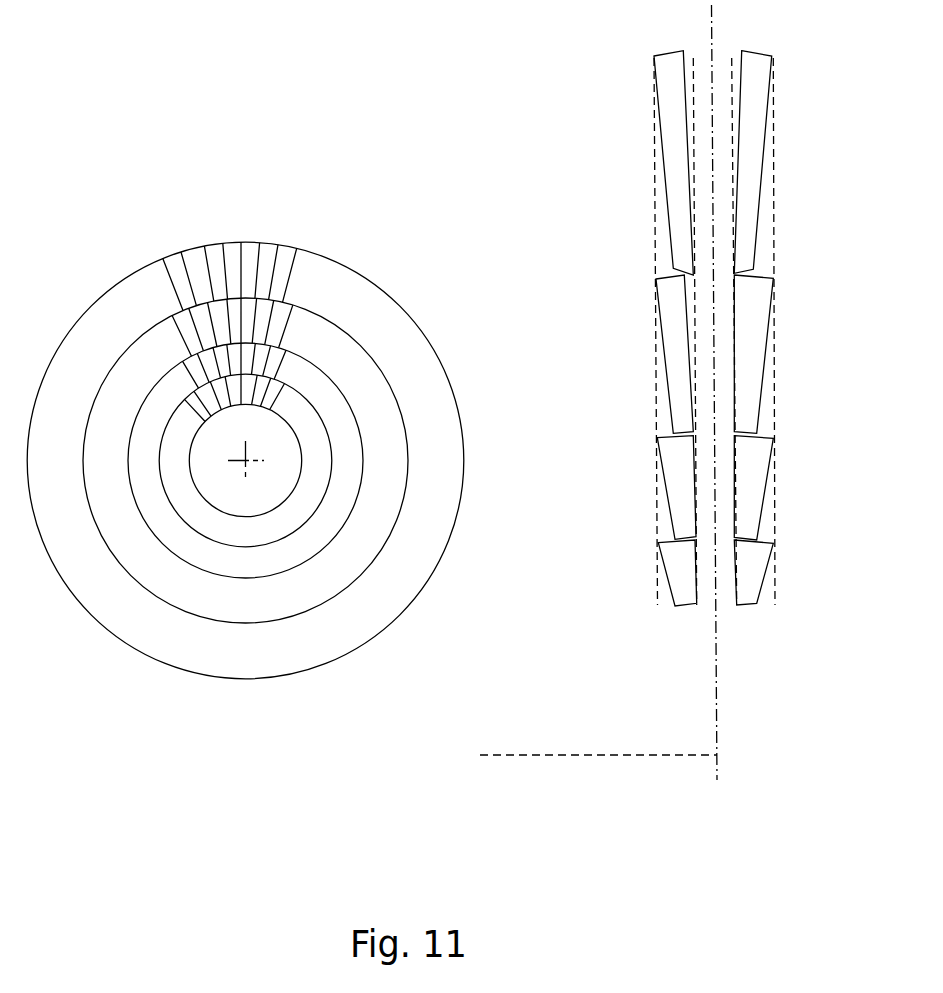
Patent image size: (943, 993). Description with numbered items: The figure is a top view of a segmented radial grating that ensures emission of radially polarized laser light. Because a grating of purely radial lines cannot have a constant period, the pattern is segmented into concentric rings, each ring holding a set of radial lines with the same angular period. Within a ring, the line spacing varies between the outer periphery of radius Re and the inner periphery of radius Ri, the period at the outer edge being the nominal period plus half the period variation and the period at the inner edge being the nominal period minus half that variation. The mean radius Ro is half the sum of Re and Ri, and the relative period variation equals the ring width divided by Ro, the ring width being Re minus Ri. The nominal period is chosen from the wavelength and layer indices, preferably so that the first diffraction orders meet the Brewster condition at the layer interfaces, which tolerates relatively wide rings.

The outer periphery radius Re is at (505, 300).
The mean ring radius Ro is at (558, 366).
The inner periphery radius Ri is at (612, 745).